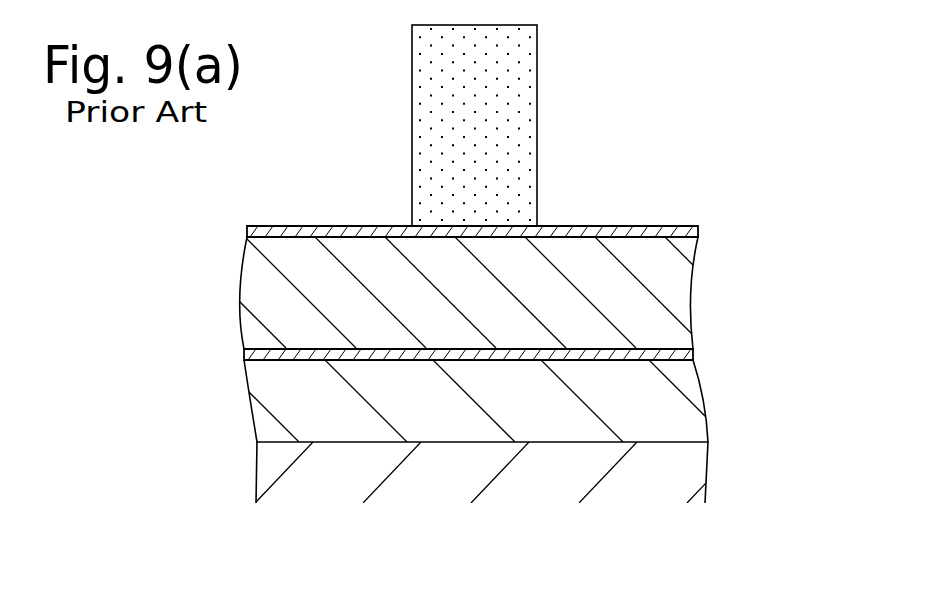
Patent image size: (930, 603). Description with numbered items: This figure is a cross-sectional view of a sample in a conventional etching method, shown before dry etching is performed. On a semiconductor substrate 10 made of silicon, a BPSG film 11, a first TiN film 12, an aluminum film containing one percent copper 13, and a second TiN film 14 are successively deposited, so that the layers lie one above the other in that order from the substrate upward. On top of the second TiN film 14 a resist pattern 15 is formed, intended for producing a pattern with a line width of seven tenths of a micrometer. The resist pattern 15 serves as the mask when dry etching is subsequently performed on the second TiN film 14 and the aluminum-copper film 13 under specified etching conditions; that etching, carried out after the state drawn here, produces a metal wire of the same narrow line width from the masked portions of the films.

The semiconductor substrate 10 is at (708, 468).
The BPSG film 11 is at (703, 404).
The first TiN film 12 is at (693, 352).
The Al-1% Cu film 13 is at (688, 288).
The second TiN film 14 is at (698, 229).
The resist pattern 15 is at (537, 55).